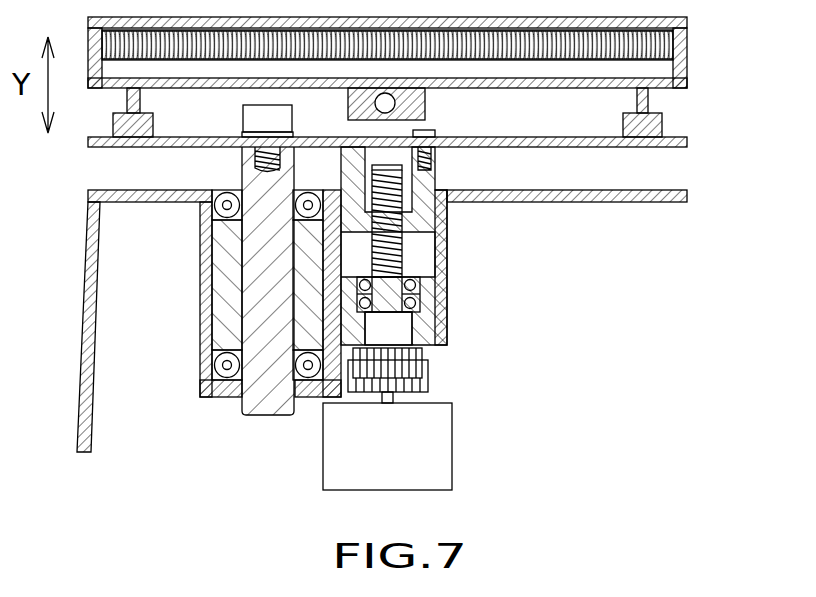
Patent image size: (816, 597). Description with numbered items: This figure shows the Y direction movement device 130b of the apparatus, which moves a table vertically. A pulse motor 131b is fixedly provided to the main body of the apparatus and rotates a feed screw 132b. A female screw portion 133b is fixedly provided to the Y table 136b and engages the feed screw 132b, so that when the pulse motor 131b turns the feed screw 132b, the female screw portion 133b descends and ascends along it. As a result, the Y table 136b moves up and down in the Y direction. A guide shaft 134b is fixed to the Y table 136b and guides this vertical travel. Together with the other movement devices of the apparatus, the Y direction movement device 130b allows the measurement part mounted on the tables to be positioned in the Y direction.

The Y direction movement device 130b is at (444, 318).
The pulse motor 131b is at (427, 447).
The feed screw 132b is at (403, 255).
The female screw portion 133b is at (427, 202).
The guide shaft 134b is at (277, 408).
The Y table 136b is at (110, 142).